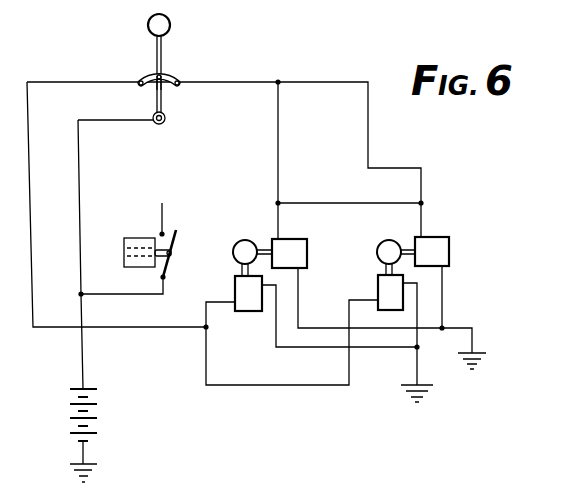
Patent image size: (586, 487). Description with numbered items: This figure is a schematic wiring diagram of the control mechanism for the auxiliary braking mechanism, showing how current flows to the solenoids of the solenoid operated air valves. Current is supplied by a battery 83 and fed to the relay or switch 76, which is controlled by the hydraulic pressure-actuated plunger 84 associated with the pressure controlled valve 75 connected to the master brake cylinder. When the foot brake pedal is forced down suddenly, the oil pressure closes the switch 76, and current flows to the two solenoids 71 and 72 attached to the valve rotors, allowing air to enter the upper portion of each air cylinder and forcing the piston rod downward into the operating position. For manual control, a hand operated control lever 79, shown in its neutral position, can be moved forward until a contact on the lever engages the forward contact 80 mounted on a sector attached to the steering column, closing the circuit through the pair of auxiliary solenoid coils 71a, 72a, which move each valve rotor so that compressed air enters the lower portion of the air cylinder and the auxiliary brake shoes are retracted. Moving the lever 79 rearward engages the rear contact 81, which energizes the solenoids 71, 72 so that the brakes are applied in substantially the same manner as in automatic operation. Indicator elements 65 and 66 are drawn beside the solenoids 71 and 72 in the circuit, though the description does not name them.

The hand operated control lever 79 is at (157, 48).
The forward contact 80 is at (138, 83).
The rear contact 81 is at (179, 85).
The pressure controlled valve 75 is at (129, 237).
The hydraulic pressure-actuated plunger 84 is at (160, 268).
The switch or relay 76 is at (177, 239).
The indicator lamp 65 is at (250, 240).
The indicator lamp 66 is at (393, 240).
The solenoid coil 71 is at (300, 237).
The solenoid coil 72 is at (448, 237).
The auxiliary solenoid coil 71a is at (240, 312).
The auxiliary solenoid coil 72a is at (378, 294).
The battery 83 is at (86, 389).